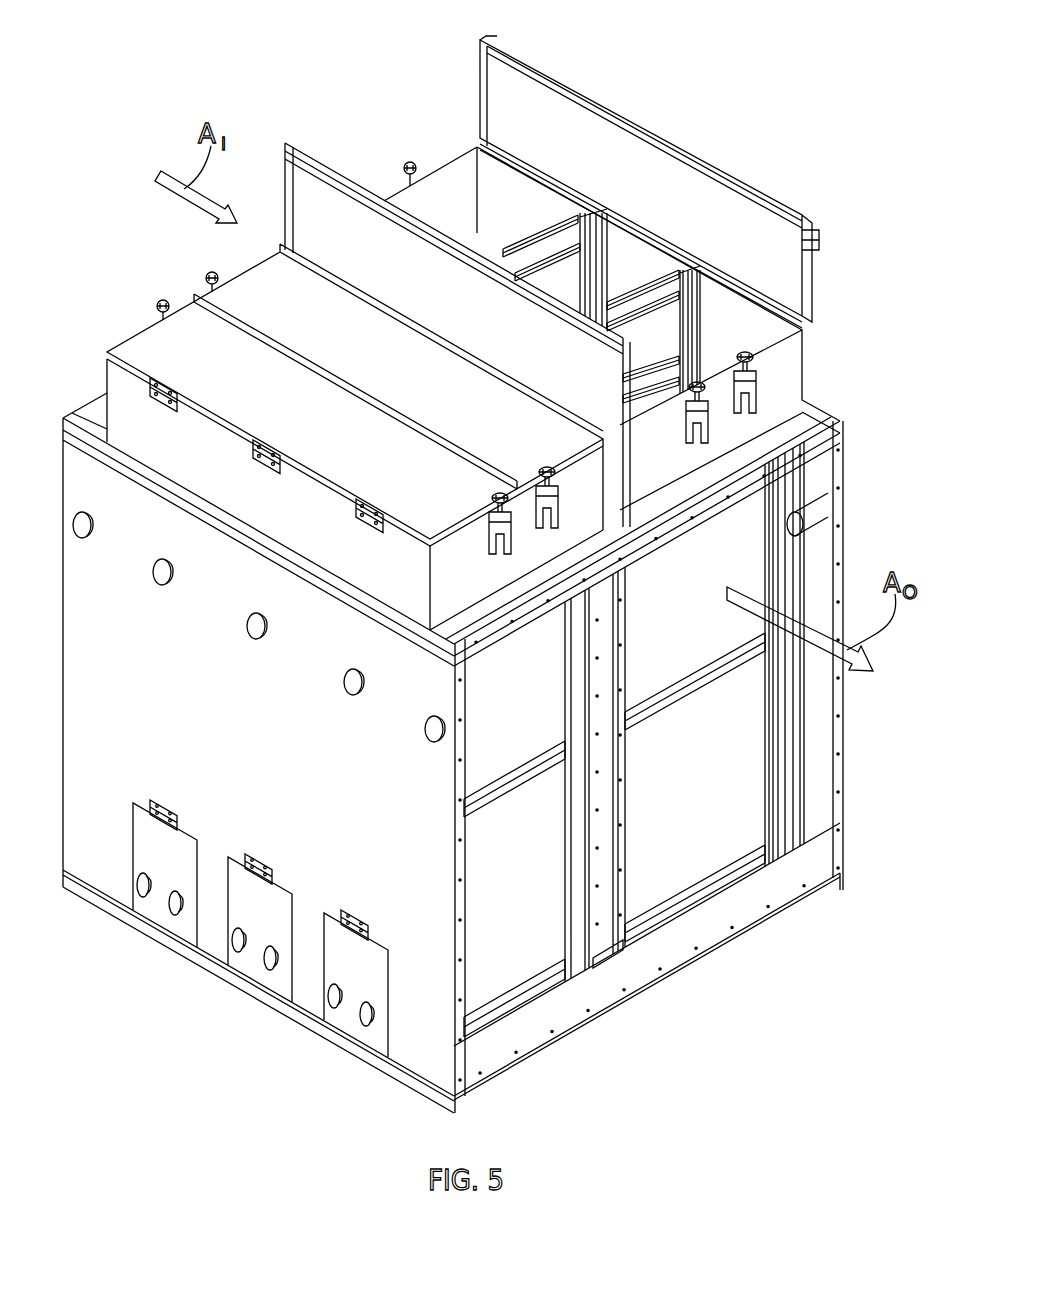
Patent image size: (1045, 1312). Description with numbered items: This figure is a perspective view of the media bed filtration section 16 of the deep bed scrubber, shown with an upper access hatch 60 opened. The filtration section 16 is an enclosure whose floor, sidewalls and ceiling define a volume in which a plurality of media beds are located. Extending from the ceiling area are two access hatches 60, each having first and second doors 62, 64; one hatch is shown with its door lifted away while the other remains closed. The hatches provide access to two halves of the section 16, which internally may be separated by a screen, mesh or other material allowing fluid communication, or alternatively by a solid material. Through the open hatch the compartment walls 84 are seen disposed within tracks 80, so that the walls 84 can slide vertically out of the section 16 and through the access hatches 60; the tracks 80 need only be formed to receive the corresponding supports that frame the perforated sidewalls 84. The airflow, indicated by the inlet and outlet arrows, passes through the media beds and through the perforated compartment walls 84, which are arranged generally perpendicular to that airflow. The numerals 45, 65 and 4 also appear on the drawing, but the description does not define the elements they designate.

The media bed filtration section 16 is at (715, 65).
The center post 45 is at (608, 816).
The access hatch 60 is at (476, 326).
The first door 62 is at (454, 400).
The second door 64 is at (386, 462).
The latch 65 is at (763, 390).
The track 80 is at (604, 262).
The compartment wall 84 is at (563, 270).
The section view indicator 4 is at (298, 418).